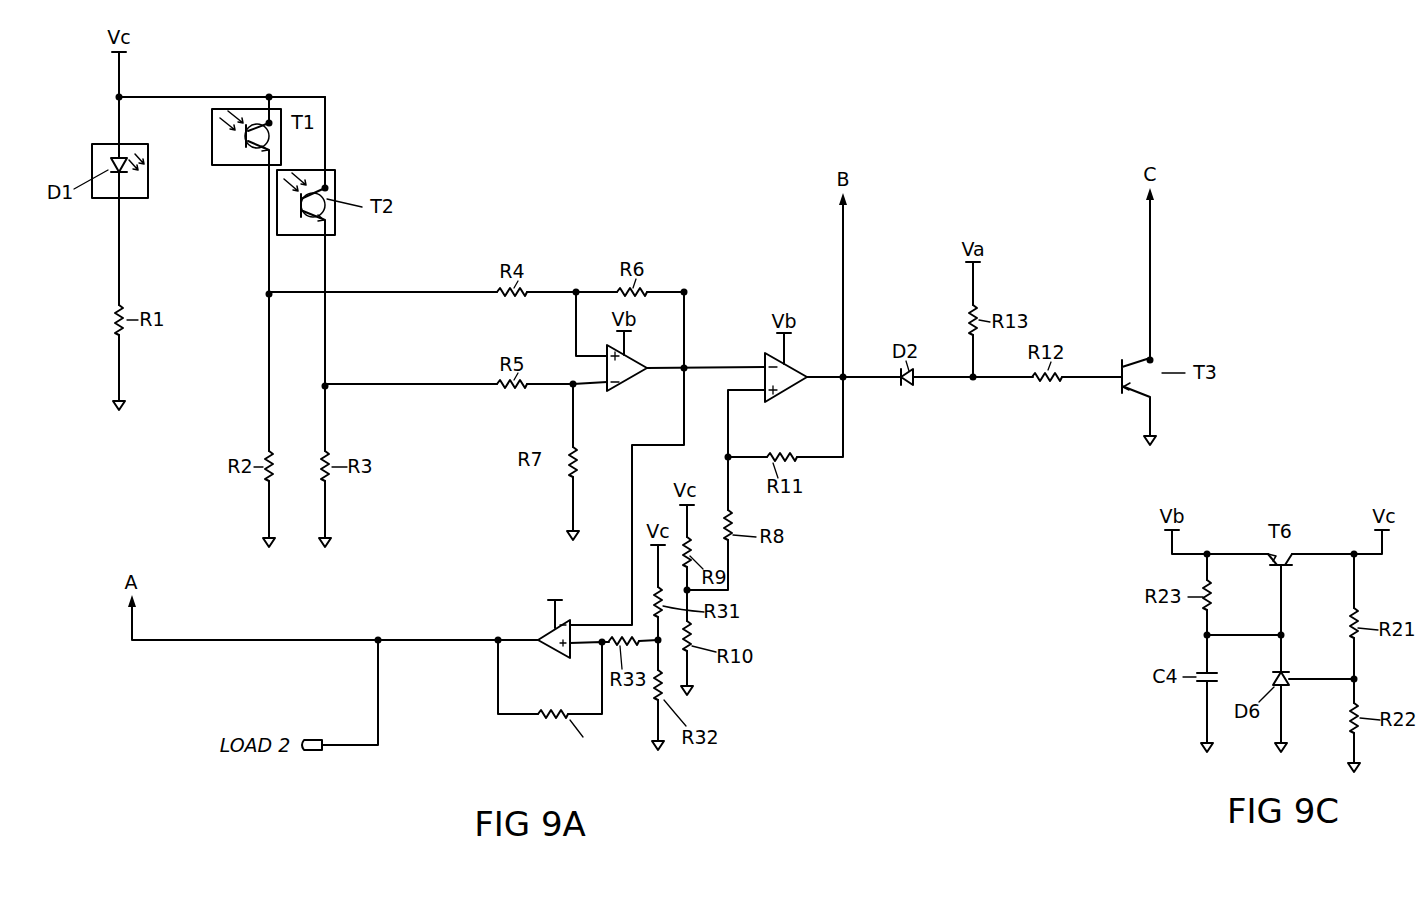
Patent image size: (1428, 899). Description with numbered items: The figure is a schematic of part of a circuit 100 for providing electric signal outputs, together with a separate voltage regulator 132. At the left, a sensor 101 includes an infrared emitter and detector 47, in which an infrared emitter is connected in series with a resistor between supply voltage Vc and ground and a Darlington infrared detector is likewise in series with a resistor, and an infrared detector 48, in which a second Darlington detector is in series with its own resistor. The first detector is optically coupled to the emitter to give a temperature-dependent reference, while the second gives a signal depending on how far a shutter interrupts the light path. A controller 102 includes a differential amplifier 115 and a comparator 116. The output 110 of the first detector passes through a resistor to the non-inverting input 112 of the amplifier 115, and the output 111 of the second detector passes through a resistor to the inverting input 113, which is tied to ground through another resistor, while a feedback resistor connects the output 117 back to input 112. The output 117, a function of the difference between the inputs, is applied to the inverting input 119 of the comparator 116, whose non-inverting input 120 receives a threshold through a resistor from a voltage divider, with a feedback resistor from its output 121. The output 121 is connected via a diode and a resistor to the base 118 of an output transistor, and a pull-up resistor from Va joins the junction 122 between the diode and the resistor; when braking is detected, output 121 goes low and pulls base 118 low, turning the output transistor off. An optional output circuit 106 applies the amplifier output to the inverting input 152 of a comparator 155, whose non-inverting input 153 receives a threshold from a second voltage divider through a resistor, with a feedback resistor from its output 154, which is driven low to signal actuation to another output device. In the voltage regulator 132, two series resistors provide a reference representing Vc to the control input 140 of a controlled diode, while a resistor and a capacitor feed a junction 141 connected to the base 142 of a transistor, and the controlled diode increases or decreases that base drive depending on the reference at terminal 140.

In FIG. 9A, the infrared emitter and detector 47 is at (212, 128).
In FIG. 9A, the infrared detector 48 is at (336, 181).
In FIG. 9A, the circuit 100 is at (463, 158).
In FIG. 9A, the sensor 101 is at (196, 370).
In FIG. 9A, the controller 102 is at (887, 463).
In FIG. 9A, the output circuit 106 is at (541, 729).
In FIG. 9A, the output of infrared detector T1 110 is at (268, 293).
In FIG. 9A, the output of infrared detector T2 111 is at (327, 385).
In FIG. 9A, the non-inverting input 112 is at (606, 353).
In FIG. 9A, the inverting input 113 is at (610, 386).
In FIG. 9A, the differential amplifier 115 is at (638, 379).
In FIG. 9A, the comparator 116 is at (790, 391).
In FIG. 9A, the output of amplifier 117 is at (686, 366).
In FIG. 9A, the base of transistor T3 118 is at (1121, 370).
In FIG. 9A, the inverting input 119 is at (764, 366).
In FIG. 9A, the non-inverting input 120 is at (764, 396).
In FIG. 9A, the output 121 is at (794, 380).
In FIG. 9A, the junction 122 is at (975, 380).
In FIG. 9C, the voltage regulator 132 is at (1396, 580).
In FIG. 9C, the control input 140 is at (1291, 678).
In FIG. 9C, the junction 141 is at (1284, 634).
In FIG. 9C, the base of transistor T6 142 is at (1284, 569).
In FIG. 9A, the inverting input 152 is at (575, 627).
In FIG. 9A, the non-inverting input 153 is at (574, 655).
In FIG. 9A, the output 154 is at (520, 636).
In FIG. 9A, the comparator 155 is at (562, 645).